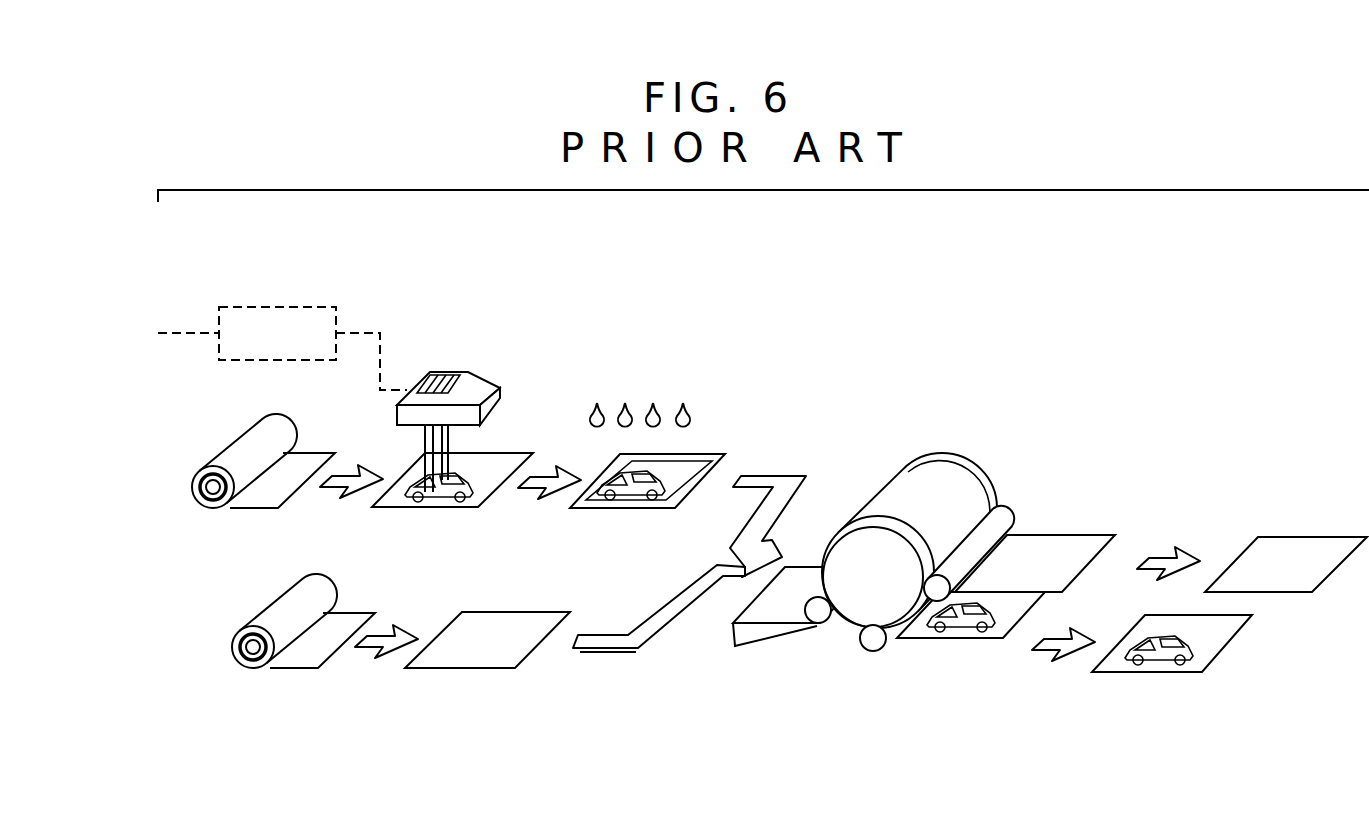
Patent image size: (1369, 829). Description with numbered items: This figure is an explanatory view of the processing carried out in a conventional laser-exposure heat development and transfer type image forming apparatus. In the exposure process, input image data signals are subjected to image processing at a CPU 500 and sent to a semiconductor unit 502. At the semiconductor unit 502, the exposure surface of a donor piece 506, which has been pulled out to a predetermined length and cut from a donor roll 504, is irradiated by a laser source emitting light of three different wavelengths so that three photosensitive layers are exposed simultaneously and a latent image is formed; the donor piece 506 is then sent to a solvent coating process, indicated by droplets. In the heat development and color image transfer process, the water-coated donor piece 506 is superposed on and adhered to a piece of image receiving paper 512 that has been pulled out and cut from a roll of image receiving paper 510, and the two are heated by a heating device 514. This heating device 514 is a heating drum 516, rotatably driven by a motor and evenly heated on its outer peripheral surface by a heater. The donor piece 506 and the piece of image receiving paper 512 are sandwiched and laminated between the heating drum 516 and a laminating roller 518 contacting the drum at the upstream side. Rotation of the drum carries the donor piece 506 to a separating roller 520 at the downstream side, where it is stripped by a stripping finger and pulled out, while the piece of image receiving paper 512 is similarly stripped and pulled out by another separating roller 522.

The CPU 500 is at (297, 300).
The semiconductor unit 502 is at (455, 372).
The donor roll 504 is at (240, 447).
The donor piece 506 is at (503, 460).
The roll of image receiving paper 510 is at (280, 602).
The piece of image receiving paper 512 is at (462, 655).
The heating device 514 is at (952, 437).
The heating drum 516 is at (855, 608).
The laminating roller 518 is at (800, 630).
The separating roller 520 is at (1005, 522).
The separating roller 522 is at (873, 640).